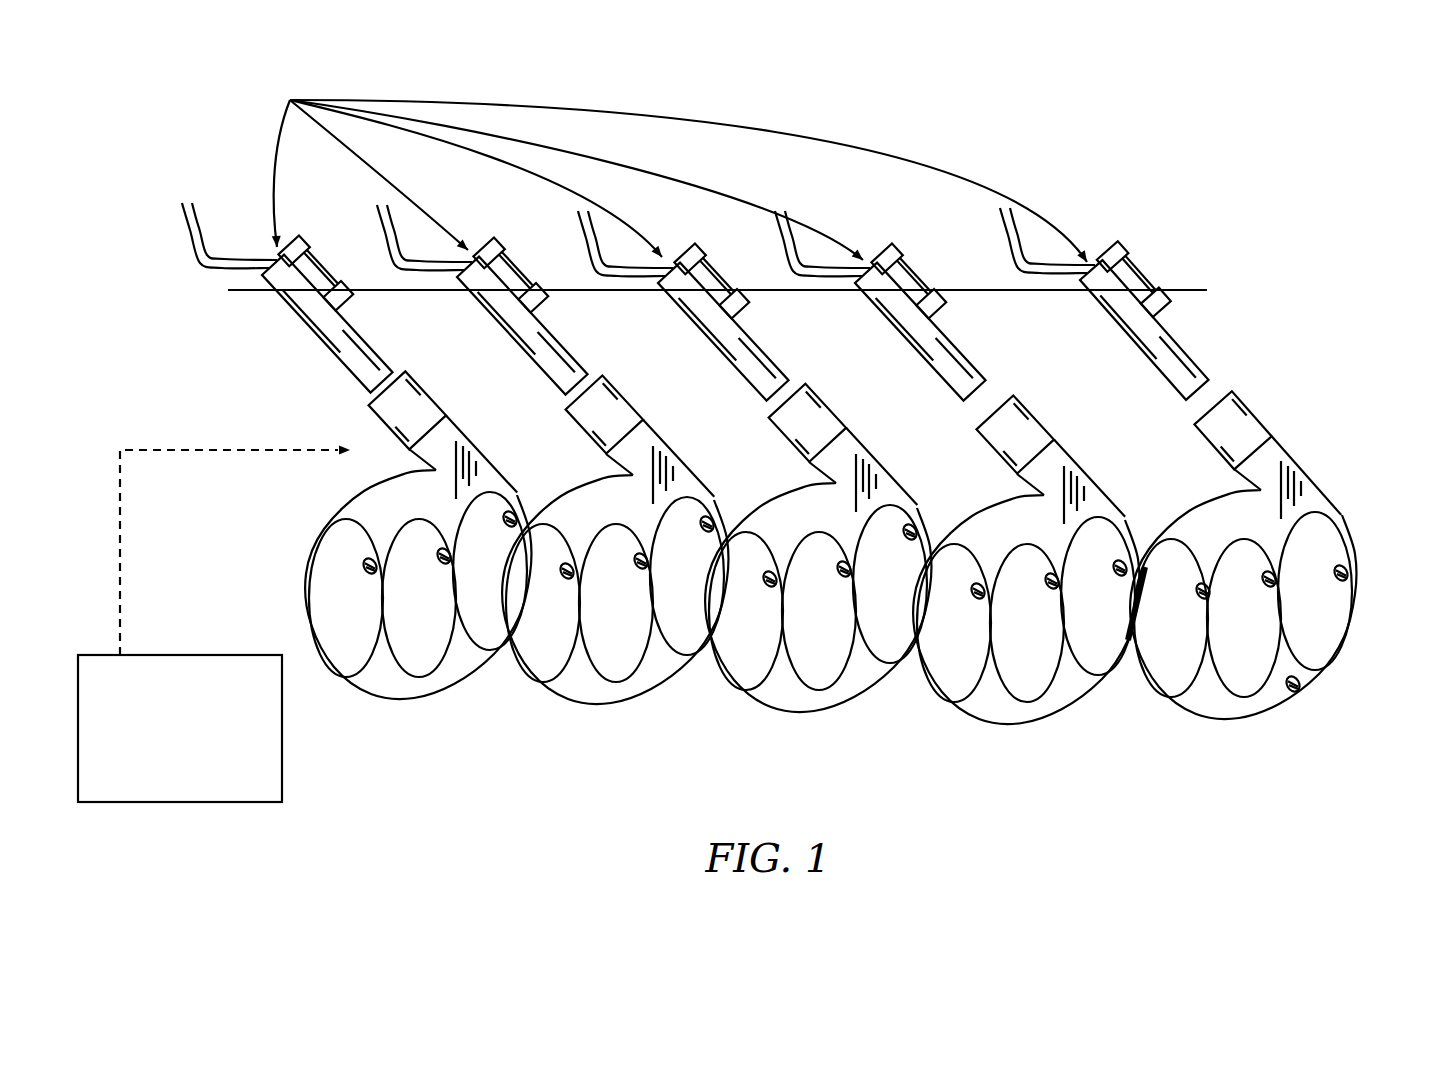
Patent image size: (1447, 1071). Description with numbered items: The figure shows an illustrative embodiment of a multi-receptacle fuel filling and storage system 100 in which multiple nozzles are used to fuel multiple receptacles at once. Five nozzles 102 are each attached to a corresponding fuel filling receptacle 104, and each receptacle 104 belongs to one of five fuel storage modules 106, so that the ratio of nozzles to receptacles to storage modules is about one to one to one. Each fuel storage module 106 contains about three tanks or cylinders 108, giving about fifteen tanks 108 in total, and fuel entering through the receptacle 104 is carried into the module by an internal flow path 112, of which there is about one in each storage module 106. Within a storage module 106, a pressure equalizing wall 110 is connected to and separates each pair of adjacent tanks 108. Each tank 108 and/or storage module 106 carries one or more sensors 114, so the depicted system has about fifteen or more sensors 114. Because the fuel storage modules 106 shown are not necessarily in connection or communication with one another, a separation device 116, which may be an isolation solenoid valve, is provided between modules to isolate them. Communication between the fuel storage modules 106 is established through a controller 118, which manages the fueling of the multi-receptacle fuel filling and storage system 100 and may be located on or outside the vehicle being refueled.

The multi-receptacle fuel filling and storage system 100 is at (1178, 247).
The nozzle 102 is at (704, 234).
The fuel filling receptacle 104 is at (380, 425).
The fuel storage module 106 is at (390, 510).
The tank 108 is at (321, 610).
The pressure equalizing wall 110 is at (380, 648).
The internal flow path 112 is at (418, 463).
The sensor 114 is at (360, 565).
The separation device 116 is at (1128, 684).
The controller 118 is at (159, 741).